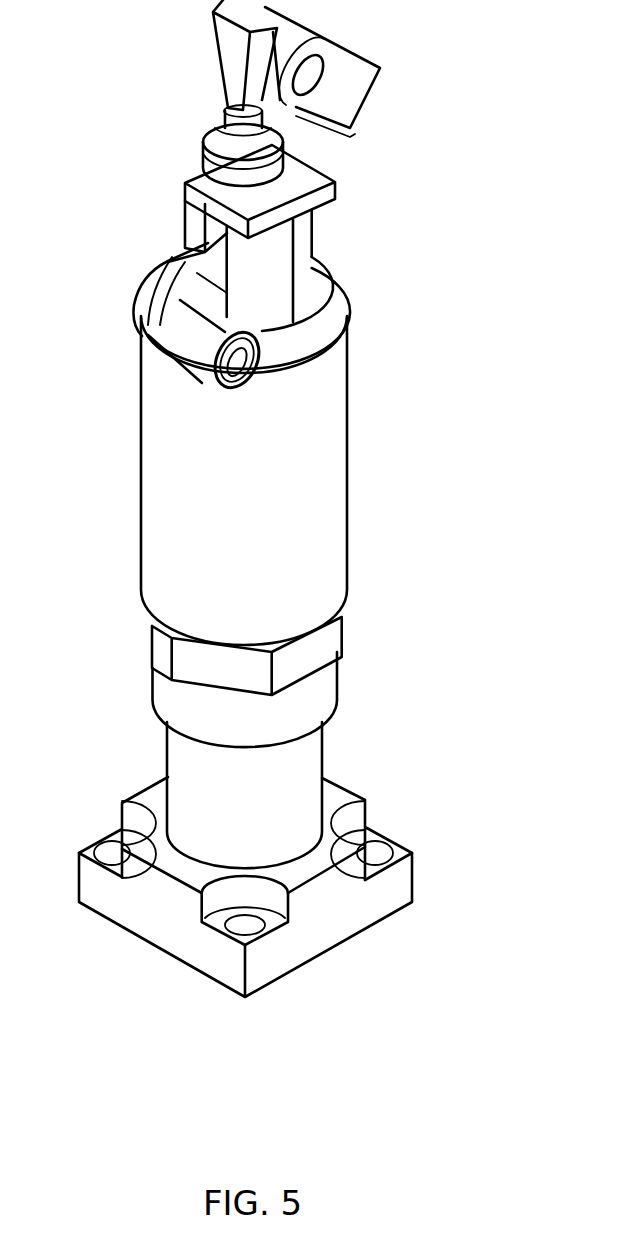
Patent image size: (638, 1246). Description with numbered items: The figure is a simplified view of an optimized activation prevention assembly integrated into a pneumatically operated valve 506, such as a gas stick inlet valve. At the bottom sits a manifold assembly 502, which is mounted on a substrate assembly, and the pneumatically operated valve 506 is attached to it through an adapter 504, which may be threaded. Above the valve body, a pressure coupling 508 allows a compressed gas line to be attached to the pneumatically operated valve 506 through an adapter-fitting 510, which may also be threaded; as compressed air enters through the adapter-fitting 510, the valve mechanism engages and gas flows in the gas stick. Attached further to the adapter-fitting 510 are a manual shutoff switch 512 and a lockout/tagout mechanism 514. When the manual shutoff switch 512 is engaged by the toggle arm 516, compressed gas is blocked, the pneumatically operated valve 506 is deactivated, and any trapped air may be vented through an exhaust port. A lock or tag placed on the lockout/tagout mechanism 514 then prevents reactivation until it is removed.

The manifold assembly 502 is at (387, 877).
The adapter 504 is at (283, 778).
The pneumatically operated valve 506 is at (327, 485).
The pressure coupling 508 is at (262, 372).
The adapter-fitting 510 is at (273, 263).
The manual shutoff switch 512 is at (253, 142).
The lockout/tagout mechanism 514 is at (340, 95).
The toggle arm 516 is at (217, 67).